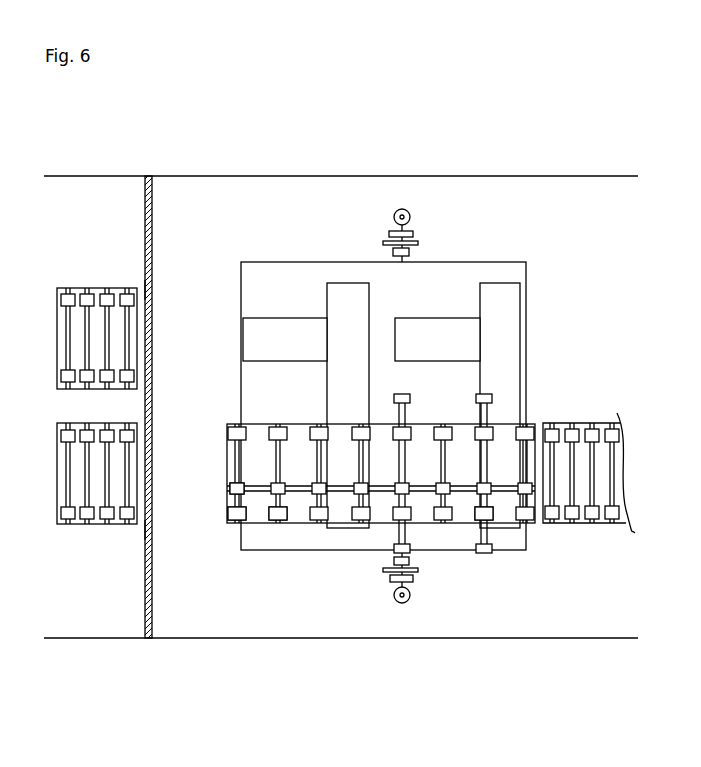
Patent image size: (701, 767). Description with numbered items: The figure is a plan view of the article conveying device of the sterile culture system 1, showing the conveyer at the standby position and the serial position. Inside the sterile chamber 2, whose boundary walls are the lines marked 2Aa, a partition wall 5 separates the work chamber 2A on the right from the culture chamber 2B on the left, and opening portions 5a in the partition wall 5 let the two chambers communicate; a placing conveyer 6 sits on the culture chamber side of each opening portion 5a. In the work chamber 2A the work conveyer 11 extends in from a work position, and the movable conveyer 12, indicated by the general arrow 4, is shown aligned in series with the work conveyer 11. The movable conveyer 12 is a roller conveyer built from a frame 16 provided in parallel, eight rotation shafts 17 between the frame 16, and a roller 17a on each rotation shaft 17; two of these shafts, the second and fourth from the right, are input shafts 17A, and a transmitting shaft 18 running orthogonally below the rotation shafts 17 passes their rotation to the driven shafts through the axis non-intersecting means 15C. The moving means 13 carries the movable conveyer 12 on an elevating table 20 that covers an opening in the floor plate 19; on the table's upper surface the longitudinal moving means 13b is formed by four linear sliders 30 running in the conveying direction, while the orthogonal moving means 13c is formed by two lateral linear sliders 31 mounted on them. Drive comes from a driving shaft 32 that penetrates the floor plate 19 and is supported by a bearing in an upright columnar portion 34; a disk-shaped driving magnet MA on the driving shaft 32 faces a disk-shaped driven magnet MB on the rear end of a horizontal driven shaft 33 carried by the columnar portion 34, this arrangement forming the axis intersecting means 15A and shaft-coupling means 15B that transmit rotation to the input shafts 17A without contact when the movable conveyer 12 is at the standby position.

The sterile culture system 1 is at (370, 128).
The sterile chamber 2 is at (203, 176).
The work chamber 2A is at (610, 234).
The wall portion 2Aa is at (291, 176).
The culture chamber 2B is at (70, 234).
The transport conveyor unit 4 is at (540, 317).
The partition wall 5 is at (146, 196).
The opening portion 5a is at (152, 292).
The placing conveyer 6 is at (80, 288).
The work conveyer 11 is at (604, 416).
The movable conveyer 12 is at (296, 520).
The moving means 13 is at (506, 262).
The longitudinal moving means 13b is at (283, 333).
The orthogonal moving means 13c is at (510, 292).
The axis intersecting means 15A is at (413, 205).
The shaft-coupling means 15B is at (381, 558).
The axis non-intersecting means 15C is at (222, 492).
The frame 16 is at (227, 424).
The rotation shaft 17 is at (237, 460).
The input shaft 17A is at (408, 463).
The roller 17a is at (228, 520).
The transmitting shaft 18 is at (258, 490).
The floor plate 19 is at (180, 618).
The elevating table 20 is at (241, 292).
The linear slider 30 is at (270, 352).
The linear slider 31 is at (347, 292).
The driving shaft 32 is at (406, 209).
The driven shaft 33 is at (418, 243).
The columnar portion 34 is at (410, 252).
The driving magnet MA is at (395, 262).
The driven magnet MB is at (396, 395).